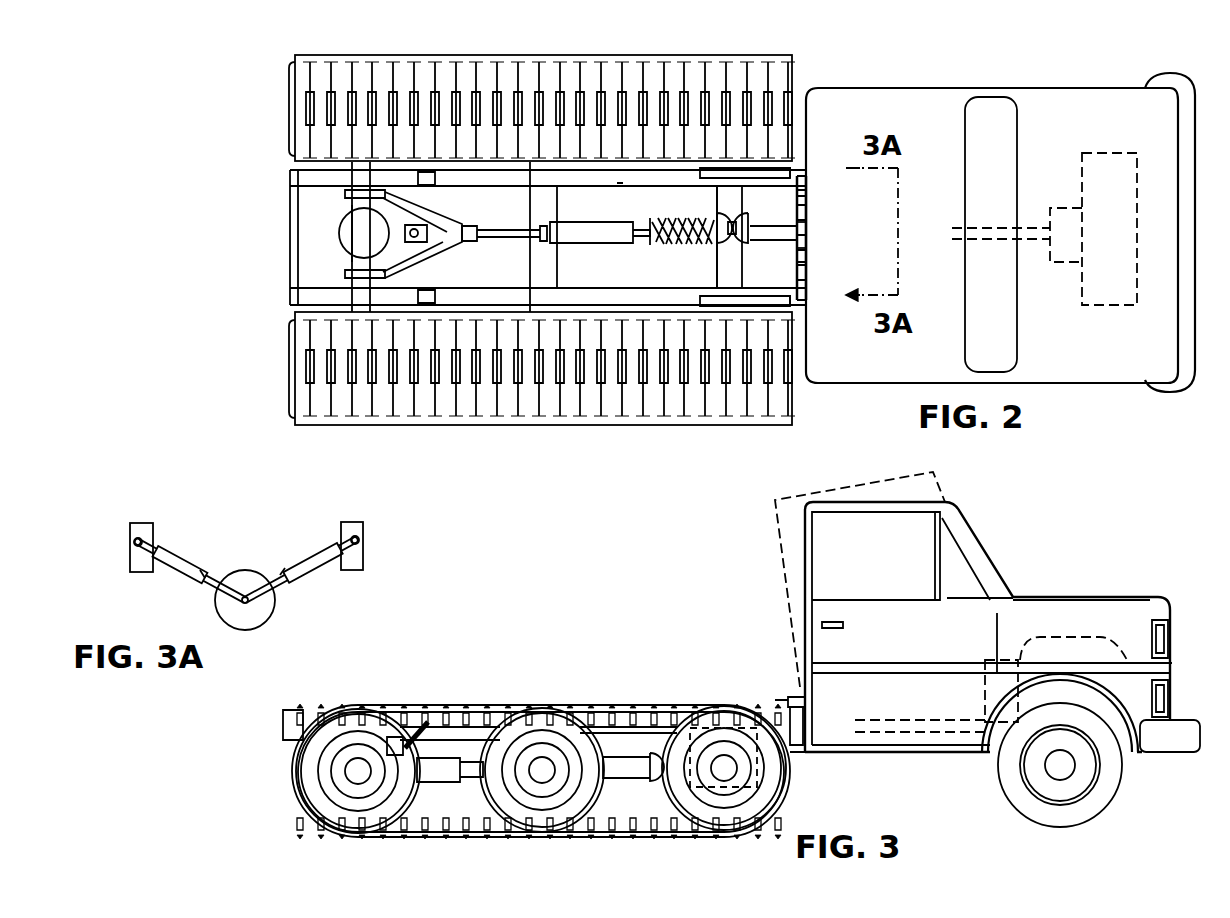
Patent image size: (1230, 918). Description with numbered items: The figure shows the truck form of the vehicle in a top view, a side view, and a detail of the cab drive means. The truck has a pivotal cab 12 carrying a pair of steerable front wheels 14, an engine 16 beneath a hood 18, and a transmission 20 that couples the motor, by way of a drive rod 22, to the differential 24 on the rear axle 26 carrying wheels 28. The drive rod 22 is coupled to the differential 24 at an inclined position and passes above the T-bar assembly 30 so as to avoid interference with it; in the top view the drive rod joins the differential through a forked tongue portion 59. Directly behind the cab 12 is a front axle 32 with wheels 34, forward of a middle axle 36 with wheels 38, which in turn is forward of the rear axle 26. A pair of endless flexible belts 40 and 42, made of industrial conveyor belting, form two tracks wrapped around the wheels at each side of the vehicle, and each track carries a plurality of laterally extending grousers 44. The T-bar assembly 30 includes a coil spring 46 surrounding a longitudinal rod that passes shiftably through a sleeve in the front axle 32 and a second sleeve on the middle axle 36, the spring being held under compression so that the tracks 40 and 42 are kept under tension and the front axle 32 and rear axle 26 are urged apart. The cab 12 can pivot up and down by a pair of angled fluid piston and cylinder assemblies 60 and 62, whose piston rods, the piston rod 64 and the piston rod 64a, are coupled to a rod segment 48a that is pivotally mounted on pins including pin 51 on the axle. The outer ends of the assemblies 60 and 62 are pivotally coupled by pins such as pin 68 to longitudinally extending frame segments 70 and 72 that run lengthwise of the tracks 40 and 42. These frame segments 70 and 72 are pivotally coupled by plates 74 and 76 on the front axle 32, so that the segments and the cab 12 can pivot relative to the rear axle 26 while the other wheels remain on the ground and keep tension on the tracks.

In FIG. 2, the pivotal cab 12 is at (1040, 88).
In FIG. 3, the pivotal cab 12 is at (886, 476).
In FIG. 3, the steerable front wheels 14 is at (1090, 804).
In FIG. 2, the engine 16 is at (1104, 304).
In FIG. 3, the engine 16 is at (1104, 645).
In FIG. 3, the hood 18 is at (1115, 597).
In FIG. 2, the transmission 20 is at (1066, 261).
In FIG. 3, the transmission 20 is at (984, 700).
In FIG. 2, the drive rod 22 is at (430, 226).
In FIG. 3, the drive rod 22 is at (905, 734).
In FIG. 2, the differential 24 is at (348, 230).
In FIG. 3, the differential 24 is at (395, 748).
In FIG. 2, the rear axle 26 is at (345, 262).
In FIG. 3, the rear wheels 28 is at (362, 722).
In FIG. 2, the T-bar assembly 30 is at (470, 252).
In FIG. 3, the T-bar assembly 30 is at (610, 783).
In FIG. 2, the front axle 32 is at (721, 200).
In FIG. 3, the front axle wheels 34 is at (715, 720).
In FIG. 2, the middle axle 36 is at (552, 203).
In FIG. 3, the middle axle wheels 38 is at (548, 716).
In FIG. 2, the endless flexible belt 40 is at (510, 76).
In FIG. 2, the endless flexible belt 42 is at (448, 412).
In FIG. 3, the endless flexible belt 42 is at (441, 706).
In FIG. 2, the grousers 44 is at (440, 95).
In FIG. 3, the grousers 44 is at (414, 704).
In FIG. 2, the coil spring 46 is at (668, 248).
In FIG. 3, the coil spring 46 is at (675, 716).
In FIG. 2, the rod segment 48a is at (762, 232).
In FIG. 3A, the rod segment 48a is at (250, 616).
In FIG. 2, the pin 51 is at (733, 290).
In FIG. 2, the A-frame tongue 59 is at (420, 258).
In FIG. 2, the fluid piston and cylinder assembly 60 is at (806, 250).
In FIG. 3, the fluid piston and cylinder assembly 60 is at (1072, 620).
In FIG. 3A, the fluid piston and cylinder assembly 60 is at (178, 568).
In FIG. 2, the fluid piston and cylinder assembly 62 is at (806, 220).
In FIG. 3A, the fluid piston and cylinder assembly 62 is at (312, 566).
In FIG. 3A, the piston rod 64 is at (212, 578).
In FIG. 3A, the link 64a is at (278, 578).
In FIG. 3A, the pin 68 is at (135, 548).
In FIG. 2, the frame segment 70 is at (600, 288).
In FIG. 3A, the frame segment 70 is at (132, 538).
In FIG. 2, the frame segment 72 is at (619, 185).
In FIG. 3A, the frame segment 72 is at (359, 532).
In FIG. 2, the plate 74 is at (790, 169).
In FIG. 2, the plate 76 is at (804, 297).
In FIG. 3, the plate 76 is at (742, 718).